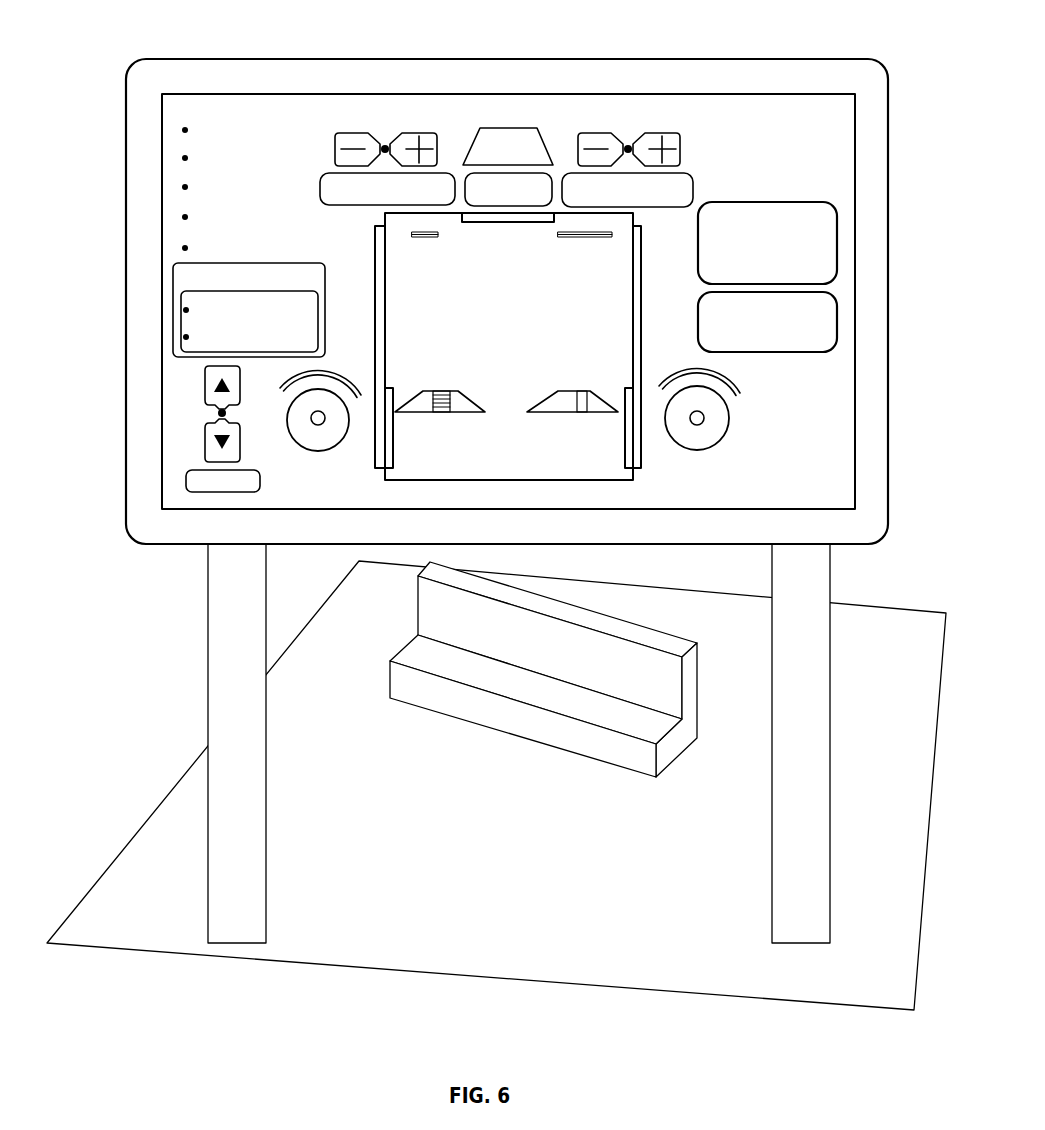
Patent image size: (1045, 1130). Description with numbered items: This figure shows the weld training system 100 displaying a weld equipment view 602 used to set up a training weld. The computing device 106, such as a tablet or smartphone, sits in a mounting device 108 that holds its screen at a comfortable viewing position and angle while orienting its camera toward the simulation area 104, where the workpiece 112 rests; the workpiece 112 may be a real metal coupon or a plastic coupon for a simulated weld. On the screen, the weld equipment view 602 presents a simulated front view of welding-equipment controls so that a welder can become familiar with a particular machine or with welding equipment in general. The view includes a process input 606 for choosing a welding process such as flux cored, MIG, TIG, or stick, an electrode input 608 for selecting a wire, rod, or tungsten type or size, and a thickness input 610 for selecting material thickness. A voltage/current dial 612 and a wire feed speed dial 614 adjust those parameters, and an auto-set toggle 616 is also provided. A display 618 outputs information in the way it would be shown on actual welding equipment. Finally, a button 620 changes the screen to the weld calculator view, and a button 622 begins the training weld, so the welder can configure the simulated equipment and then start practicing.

The weld training system 100 is at (86, 20).
The simulation area 104 is at (898, 598).
The computing device 106 is at (126, 118).
The mounting device 108 is at (266, 820).
The workpiece 112 is at (662, 633).
The weld equipment view 602 is at (203, 88).
The process input 606 is at (217, 413).
The electrode input 608 is at (378, 142).
The thickness input 610 is at (658, 130).
The voltage/current dial 612 is at (317, 452).
The wire feed speed dial 614 is at (697, 451).
The auto-set toggle 616 is at (508, 128).
The display 618 is at (632, 287).
The button to change to the weld calculator view 620 is at (765, 201).
The button to begin a training weld 622 is at (770, 353).